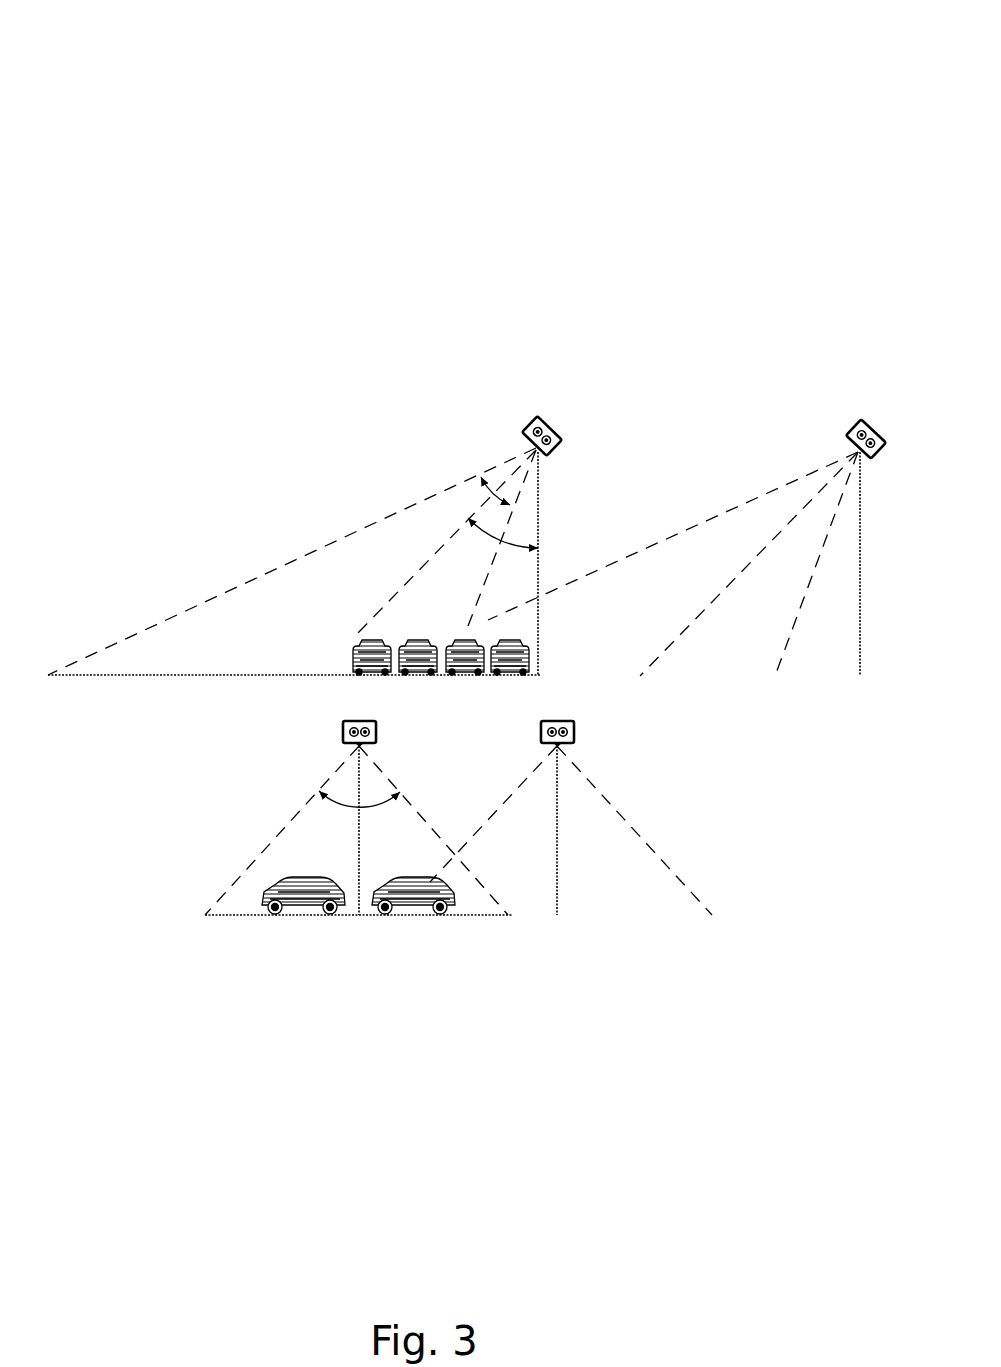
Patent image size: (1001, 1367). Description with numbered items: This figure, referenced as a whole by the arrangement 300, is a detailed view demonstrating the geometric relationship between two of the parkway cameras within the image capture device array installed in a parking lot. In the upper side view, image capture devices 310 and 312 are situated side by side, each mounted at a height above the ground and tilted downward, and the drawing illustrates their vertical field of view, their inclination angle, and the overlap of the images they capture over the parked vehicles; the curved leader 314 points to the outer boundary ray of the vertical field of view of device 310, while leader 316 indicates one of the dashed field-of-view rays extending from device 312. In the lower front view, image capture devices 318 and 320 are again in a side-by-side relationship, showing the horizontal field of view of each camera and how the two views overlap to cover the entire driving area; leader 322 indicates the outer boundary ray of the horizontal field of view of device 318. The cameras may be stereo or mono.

The camera installation geometry 300 is at (86, 77).
The image capture device 310 is at (534, 421).
The image capture device 312 is at (859, 418).
The vertical field of view boundary 314 is at (338, 662).
The field of view ray of second camera 316 is at (752, 493).
The image capture device 318 is at (343, 727).
The image capture device 320 is at (585, 730).
The horizontal field of view boundary 322 is at (280, 817).